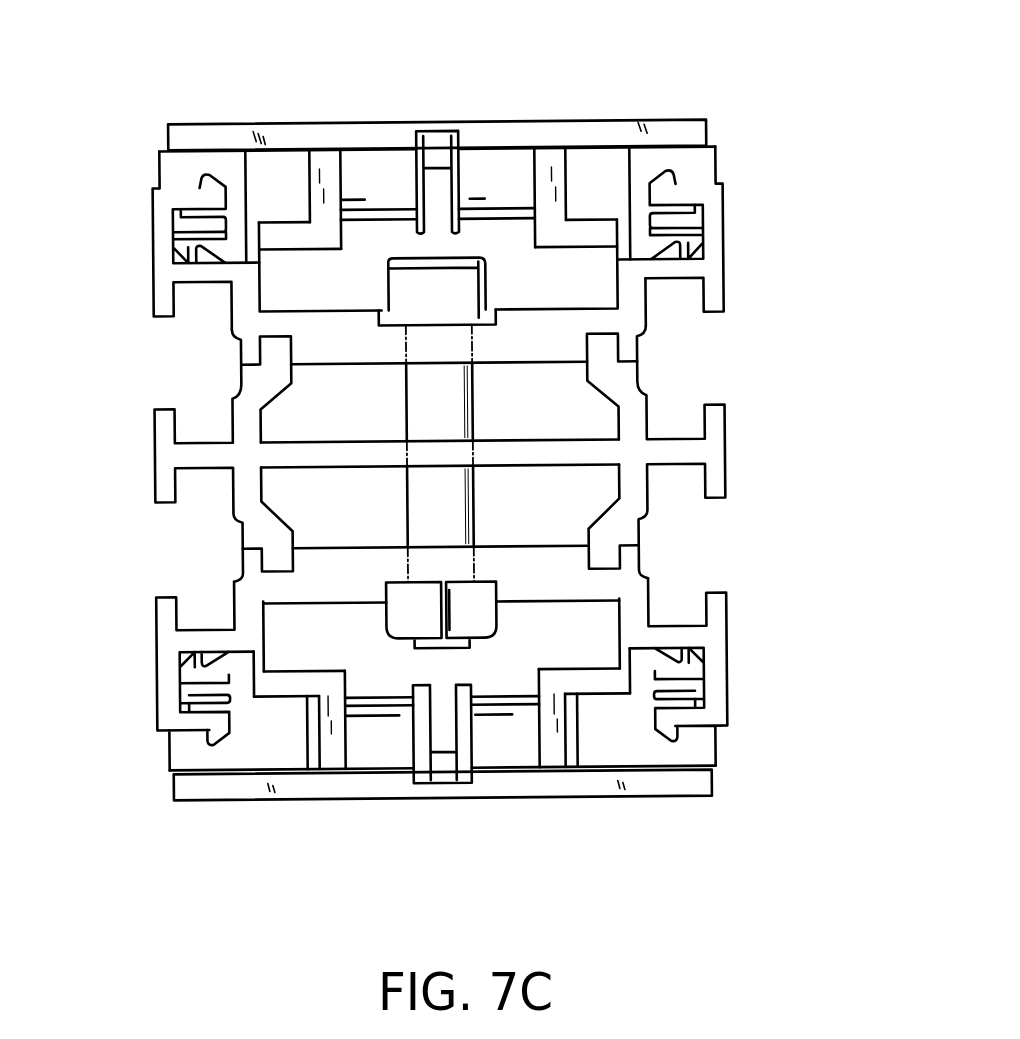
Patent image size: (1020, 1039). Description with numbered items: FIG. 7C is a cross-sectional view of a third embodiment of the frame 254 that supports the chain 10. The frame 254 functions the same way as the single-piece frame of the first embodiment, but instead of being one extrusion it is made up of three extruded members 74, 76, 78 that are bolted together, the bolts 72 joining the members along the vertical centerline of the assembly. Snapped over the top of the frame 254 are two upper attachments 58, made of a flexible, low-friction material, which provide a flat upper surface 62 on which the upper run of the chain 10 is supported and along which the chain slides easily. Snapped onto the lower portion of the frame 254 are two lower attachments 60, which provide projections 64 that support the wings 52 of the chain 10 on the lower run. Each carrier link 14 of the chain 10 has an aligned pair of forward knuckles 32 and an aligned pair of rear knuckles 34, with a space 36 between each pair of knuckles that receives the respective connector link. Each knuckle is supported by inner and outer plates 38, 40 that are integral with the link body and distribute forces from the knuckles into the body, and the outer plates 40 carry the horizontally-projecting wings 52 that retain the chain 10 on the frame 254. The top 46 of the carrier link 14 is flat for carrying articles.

The chain 10 is at (587, 73).
The carrier link 14 is at (712, 118).
The forward knuckles 32 is at (372, 760).
The rear knuckles 34 is at (362, 163).
The space 36 is at (436, 176).
The inner plate 38 is at (457, 233).
The outer plate 40 is at (320, 197).
The top 46 is at (255, 123).
The wings 52 is at (300, 266).
The upper attachments 58 is at (172, 165).
The lower attachments 60 is at (175, 753).
The flat upper surface 62 is at (203, 150).
The projections 64 is at (240, 770).
The bolts 72 is at (480, 281).
The extruded member 74 is at (722, 196).
The extruded member 76 is at (727, 452).
The extruded member 78 is at (726, 650).
The frame 254 is at (730, 292).